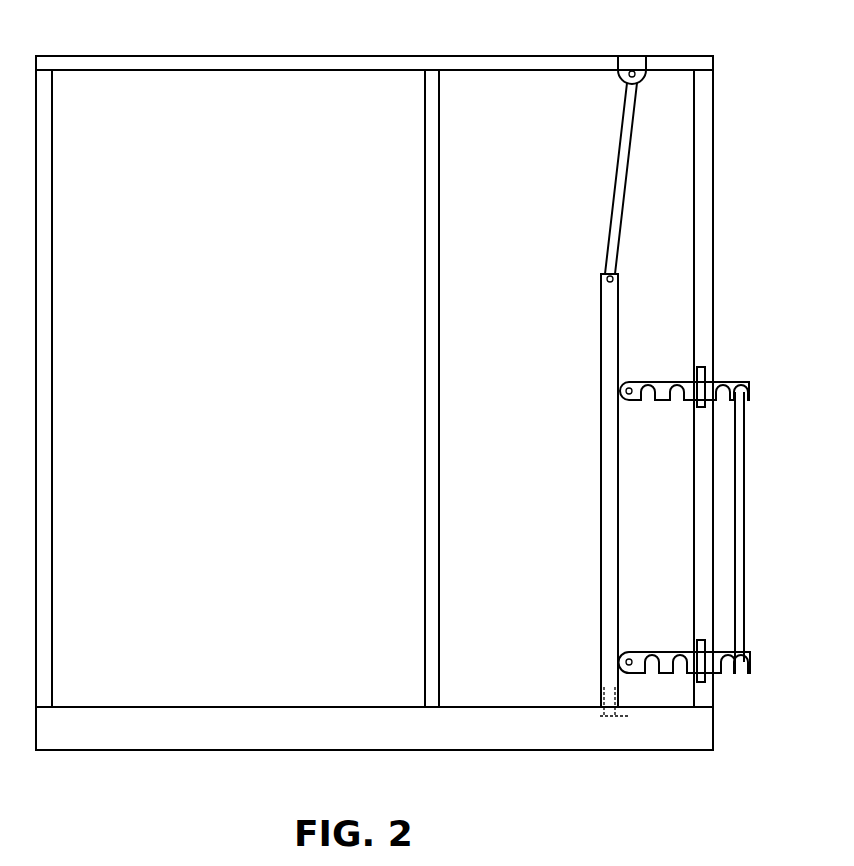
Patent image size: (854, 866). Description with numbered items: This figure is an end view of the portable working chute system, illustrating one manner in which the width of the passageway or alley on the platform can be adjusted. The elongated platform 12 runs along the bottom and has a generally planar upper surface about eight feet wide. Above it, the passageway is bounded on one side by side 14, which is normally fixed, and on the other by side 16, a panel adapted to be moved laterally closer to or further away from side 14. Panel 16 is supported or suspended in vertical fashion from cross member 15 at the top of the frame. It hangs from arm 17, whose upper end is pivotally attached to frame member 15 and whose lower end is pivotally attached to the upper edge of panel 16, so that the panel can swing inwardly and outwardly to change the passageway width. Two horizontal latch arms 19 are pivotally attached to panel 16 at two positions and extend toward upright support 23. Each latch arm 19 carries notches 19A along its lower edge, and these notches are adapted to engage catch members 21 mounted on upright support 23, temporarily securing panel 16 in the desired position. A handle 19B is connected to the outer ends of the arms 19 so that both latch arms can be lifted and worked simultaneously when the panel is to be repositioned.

The elongated platform 12 is at (333, 684).
The fixed side of passageway 14 is at (424, 493).
The cross member 15 is at (489, 55).
The movable side panel 16 is at (601, 497).
The arm 17 is at (610, 220).
The latch arm 19 is at (662, 382).
The notch 19A is at (674, 400).
The handle 19B is at (745, 608).
The catch member 21 is at (704, 378).
The upright support 23 is at (713, 290).